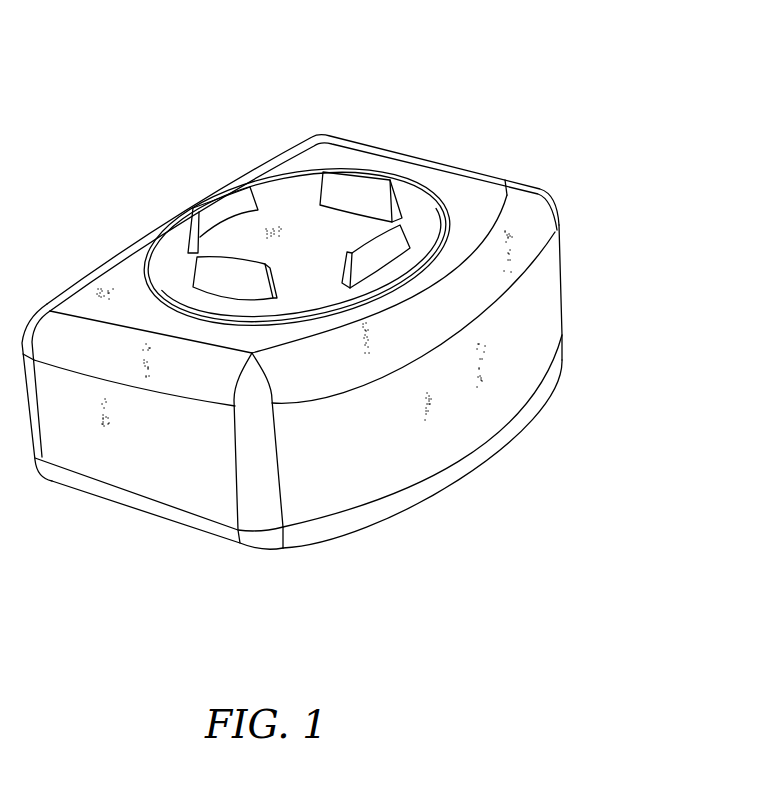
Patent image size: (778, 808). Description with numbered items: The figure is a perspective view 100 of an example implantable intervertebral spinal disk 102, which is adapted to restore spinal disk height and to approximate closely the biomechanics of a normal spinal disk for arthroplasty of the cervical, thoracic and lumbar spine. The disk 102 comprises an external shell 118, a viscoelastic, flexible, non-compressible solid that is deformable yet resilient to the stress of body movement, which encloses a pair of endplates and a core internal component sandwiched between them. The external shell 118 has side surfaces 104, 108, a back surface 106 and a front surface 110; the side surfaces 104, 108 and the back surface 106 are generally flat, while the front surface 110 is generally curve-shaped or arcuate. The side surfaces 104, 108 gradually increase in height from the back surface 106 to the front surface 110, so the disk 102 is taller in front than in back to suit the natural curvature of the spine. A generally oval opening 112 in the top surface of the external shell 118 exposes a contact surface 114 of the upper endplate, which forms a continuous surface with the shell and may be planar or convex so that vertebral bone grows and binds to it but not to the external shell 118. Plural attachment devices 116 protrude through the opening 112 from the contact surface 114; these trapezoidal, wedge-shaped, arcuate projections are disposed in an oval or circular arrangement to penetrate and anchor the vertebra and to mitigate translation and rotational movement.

The perspective view 100 is at (466, 45).
The implantable intervertebral spinal disk 102 is at (270, 568).
The side surface 104 is at (133, 492).
The back surface 106 is at (112, 268).
The side surface 108 is at (345, 141).
The front surface 110 is at (437, 477).
The opening 112 is at (447, 214).
The contact surface 114 is at (417, 207).
The attachment devices 116 is at (365, 245).
The external shell 118 is at (561, 296).